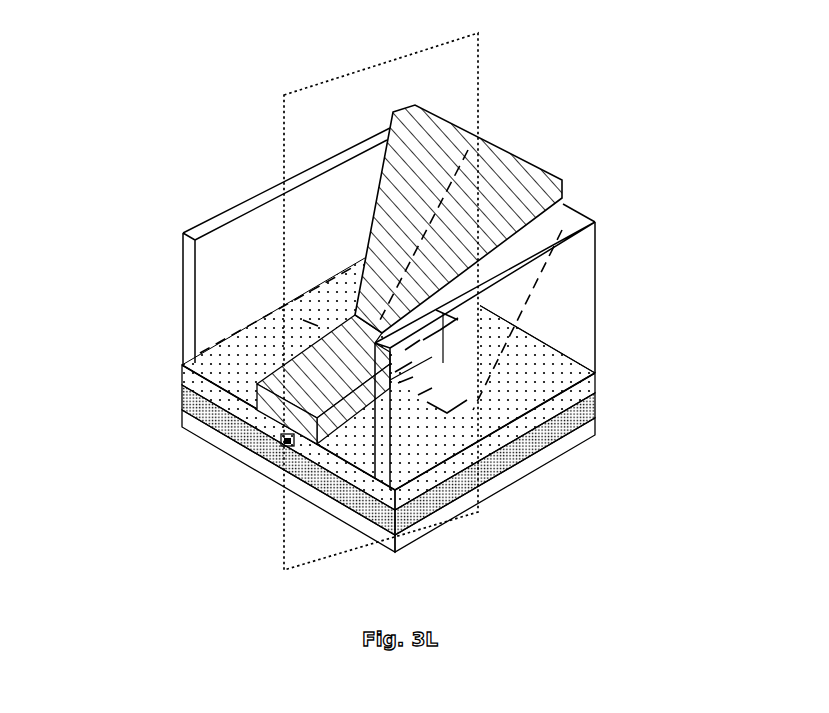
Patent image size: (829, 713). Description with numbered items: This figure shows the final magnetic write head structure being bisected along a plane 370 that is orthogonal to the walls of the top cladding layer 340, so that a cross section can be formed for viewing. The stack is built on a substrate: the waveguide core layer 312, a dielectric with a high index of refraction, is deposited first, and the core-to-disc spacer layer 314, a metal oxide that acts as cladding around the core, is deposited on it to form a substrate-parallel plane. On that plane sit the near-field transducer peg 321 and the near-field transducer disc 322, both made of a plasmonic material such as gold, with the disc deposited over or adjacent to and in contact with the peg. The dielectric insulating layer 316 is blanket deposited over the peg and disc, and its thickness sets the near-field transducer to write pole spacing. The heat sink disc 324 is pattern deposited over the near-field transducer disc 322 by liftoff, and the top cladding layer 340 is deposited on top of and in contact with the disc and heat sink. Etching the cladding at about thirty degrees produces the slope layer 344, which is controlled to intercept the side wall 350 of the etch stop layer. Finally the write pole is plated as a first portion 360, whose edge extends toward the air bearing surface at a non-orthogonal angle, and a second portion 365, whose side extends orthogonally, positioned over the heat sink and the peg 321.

The waveguide core layer 312 is at (183, 423).
The core-to-disc spacer layer 314 is at (183, 400).
The dielectric insulating layer 316 is at (183, 380).
The near-field transducer peg 321 is at (283, 440).
The near-field transducer disc 322 is at (463, 348).
The heat sink disc 324 is at (433, 362).
The top cladding layer 340 is at (232, 214).
The slope layer 344 is at (360, 185).
The side wall of etch stop layer 350 is at (467, 415).
The first portion of write pole 360 is at (425, 177).
The second portion of write pole 365 is at (277, 312).
The plane 370 is at (478, 33).